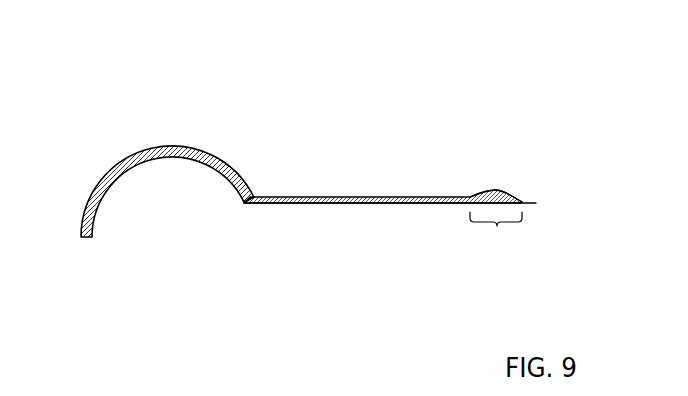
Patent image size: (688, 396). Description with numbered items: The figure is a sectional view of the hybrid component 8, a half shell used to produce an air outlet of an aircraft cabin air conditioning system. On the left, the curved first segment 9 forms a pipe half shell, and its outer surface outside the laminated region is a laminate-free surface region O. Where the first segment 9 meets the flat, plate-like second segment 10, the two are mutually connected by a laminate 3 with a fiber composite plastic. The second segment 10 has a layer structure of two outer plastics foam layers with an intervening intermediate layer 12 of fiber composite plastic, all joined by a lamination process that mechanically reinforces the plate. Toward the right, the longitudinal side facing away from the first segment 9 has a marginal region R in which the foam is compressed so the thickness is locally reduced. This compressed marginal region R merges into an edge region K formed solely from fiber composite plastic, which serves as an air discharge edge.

The hybrid component 8 is at (310, 163).
The first segment 9 is at (132, 154).
The laminate-free surface region O is at (154, 148).
The intermediate layer 12 is at (386, 197).
The second segment 10 is at (351, 204).
The laminate 3 is at (252, 203).
The marginal region R is at (496, 229).
The edge region K is at (532, 202).